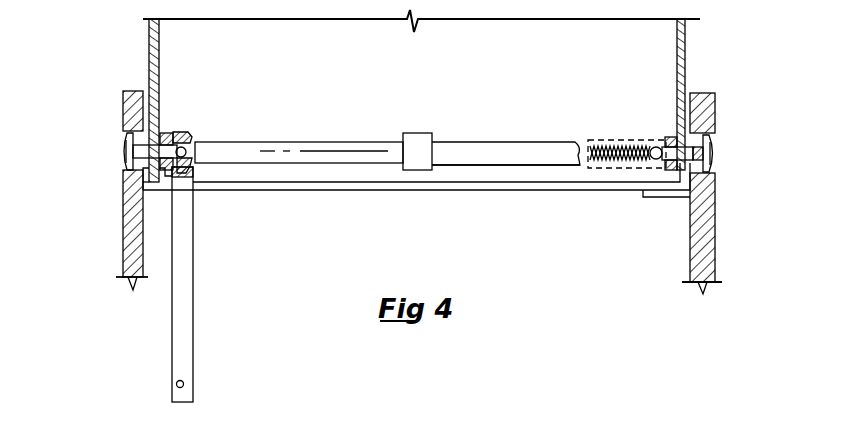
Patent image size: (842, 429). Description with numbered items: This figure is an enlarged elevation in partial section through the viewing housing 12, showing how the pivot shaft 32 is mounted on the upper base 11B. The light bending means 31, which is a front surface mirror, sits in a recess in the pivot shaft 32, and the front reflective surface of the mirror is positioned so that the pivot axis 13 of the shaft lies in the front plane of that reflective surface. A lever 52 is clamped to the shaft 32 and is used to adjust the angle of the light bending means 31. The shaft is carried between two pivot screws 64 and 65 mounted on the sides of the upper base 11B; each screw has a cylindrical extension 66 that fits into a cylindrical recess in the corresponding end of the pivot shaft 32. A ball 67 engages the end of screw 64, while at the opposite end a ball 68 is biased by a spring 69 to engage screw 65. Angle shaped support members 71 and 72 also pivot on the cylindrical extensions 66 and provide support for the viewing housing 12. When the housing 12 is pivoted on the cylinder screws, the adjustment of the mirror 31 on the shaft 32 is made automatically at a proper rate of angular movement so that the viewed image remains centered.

The viewing housing 12 is at (150, 52).
The upper base 11B is at (123, 202).
The pivot axis 13 is at (260, 143).
The light bending means 31 is at (415, 136).
The pivot shaft 32 is at (490, 143).
The lever 52 is at (188, 342).
The pivot screw 64 is at (123, 143).
The pivot screw 65 is at (712, 148).
The cylindrical extensions 66 is at (163, 136).
The ball 67 is at (188, 133).
The ball 68 is at (655, 147).
The spring 69 is at (613, 143).
The angle shaped support member 71 is at (157, 190).
The angle shaped support member 72 is at (663, 198).